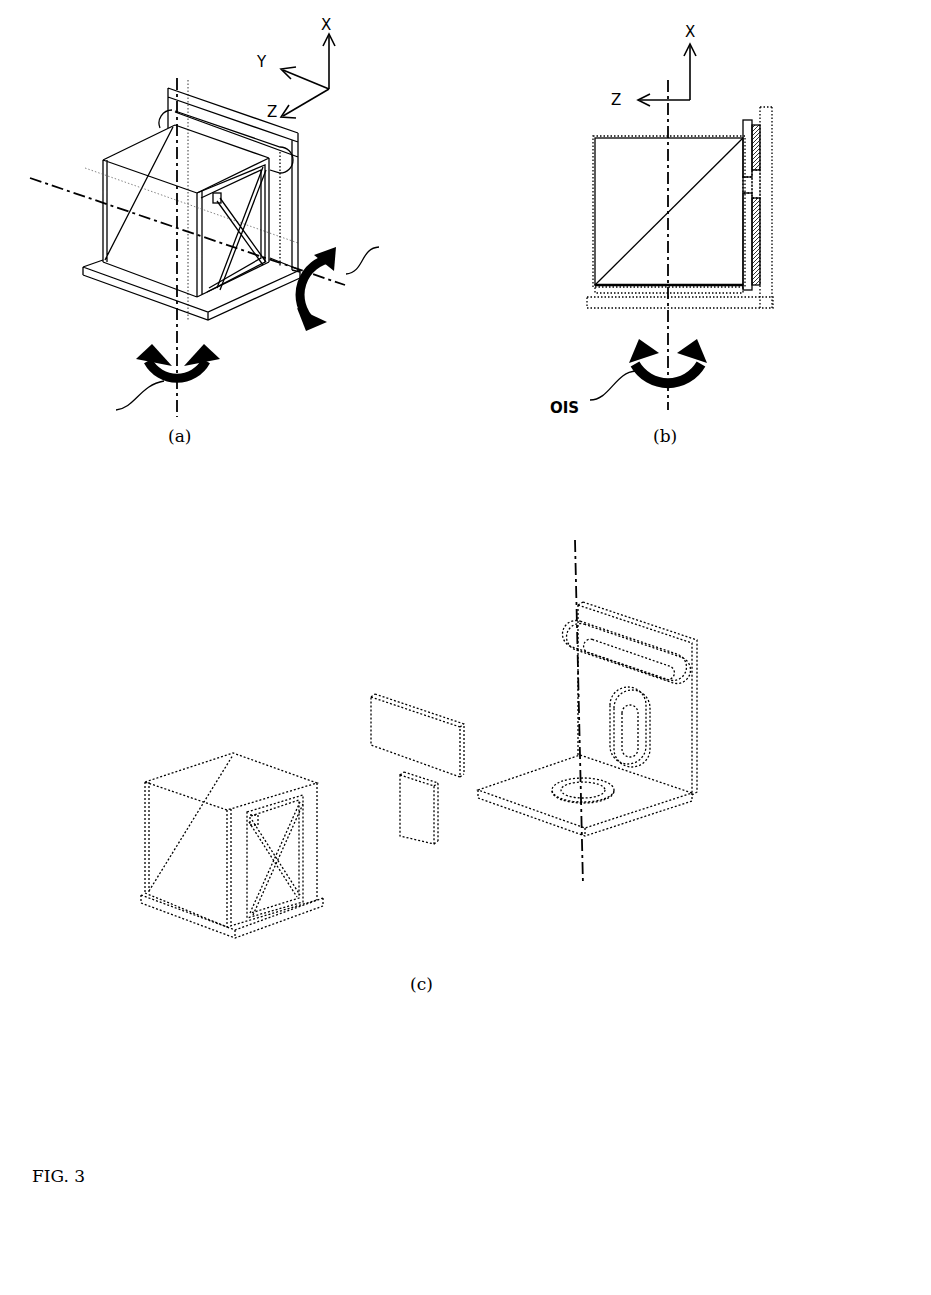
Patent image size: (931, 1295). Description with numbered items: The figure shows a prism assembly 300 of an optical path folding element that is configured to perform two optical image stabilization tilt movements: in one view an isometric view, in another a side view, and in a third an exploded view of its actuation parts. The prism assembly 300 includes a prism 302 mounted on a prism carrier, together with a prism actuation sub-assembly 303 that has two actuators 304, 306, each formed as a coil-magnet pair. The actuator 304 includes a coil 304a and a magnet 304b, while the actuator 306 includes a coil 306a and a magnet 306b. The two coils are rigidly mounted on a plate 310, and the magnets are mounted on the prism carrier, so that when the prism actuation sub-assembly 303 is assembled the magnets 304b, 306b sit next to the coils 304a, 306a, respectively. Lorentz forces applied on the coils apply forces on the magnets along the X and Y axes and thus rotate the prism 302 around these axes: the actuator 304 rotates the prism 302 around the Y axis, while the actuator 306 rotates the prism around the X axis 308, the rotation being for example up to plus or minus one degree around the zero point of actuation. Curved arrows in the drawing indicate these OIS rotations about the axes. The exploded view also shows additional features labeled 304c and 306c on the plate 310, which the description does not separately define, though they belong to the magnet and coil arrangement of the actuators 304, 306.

The prism assembly 300 is at (451, 48).
The prism 302 is at (638, 237).
The prism actuation sub-assembly 303 is at (505, 662).
The actuator 304 is at (301, 151).
The coil 304a is at (690, 681).
The magnet 304b is at (384, 726).
The third magnet 304c is at (630, 657).
The actuator 306 is at (766, 243).
The coil 306a is at (657, 738).
The magnet 306b is at (424, 822).
The third coil 306c is at (625, 728).
The axis 308 is at (181, 333).
The plate 310 is at (47, 182).